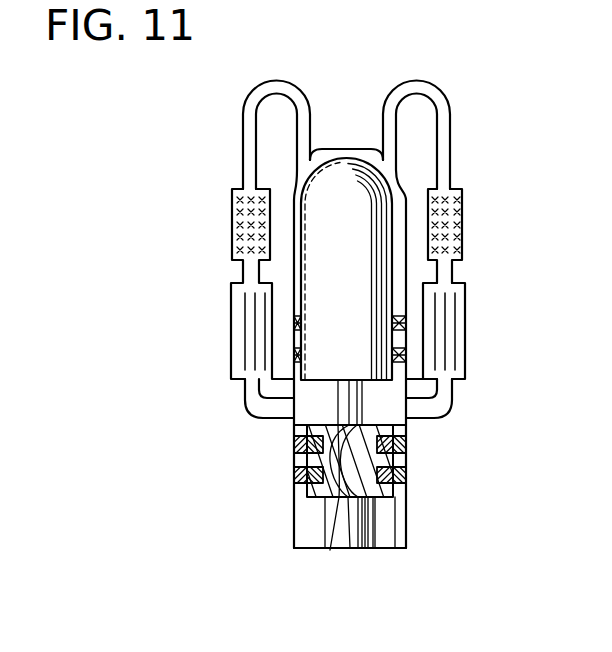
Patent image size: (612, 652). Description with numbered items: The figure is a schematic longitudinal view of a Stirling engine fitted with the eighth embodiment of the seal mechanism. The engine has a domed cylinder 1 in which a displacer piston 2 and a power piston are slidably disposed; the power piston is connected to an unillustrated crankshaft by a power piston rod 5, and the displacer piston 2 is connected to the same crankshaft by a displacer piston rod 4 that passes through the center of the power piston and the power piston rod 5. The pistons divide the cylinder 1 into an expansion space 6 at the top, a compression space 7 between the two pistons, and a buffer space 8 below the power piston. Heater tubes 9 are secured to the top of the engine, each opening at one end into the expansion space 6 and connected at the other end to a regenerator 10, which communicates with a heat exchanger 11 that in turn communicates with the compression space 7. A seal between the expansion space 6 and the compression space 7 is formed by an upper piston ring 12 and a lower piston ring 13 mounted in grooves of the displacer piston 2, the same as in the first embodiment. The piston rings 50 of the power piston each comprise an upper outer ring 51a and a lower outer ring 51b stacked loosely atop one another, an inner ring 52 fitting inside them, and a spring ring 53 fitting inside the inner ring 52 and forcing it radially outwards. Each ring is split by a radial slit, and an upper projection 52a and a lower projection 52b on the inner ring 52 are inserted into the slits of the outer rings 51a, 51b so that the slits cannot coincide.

The domed cylinder 1 is at (405, 197).
The displacer piston 2 is at (335, 178).
The displacer piston rod 4 is at (337, 399).
The power piston rod 5 is at (325, 523).
The expansion space 6 is at (360, 158).
The compression space 7 is at (400, 408).
The buffer space 8 is at (384, 530).
The heater tube 9 is at (444, 122).
The regenerator 10 is at (448, 202).
The heat exchanger 11 is at (452, 322).
The upper piston ring 12 is at (290, 324).
The lower piston ring 13 is at (291, 354).
The piston ring 50 is at (243, 466).
The upper outer ring 51a is at (407, 436).
The lower outer ring 51b is at (294, 470).
The upper projection 52a is at (294, 440).
The lower projection 52b is at (407, 450).
The inner ring 52 is at (336, 549).
The spring ring 53 is at (356, 549).